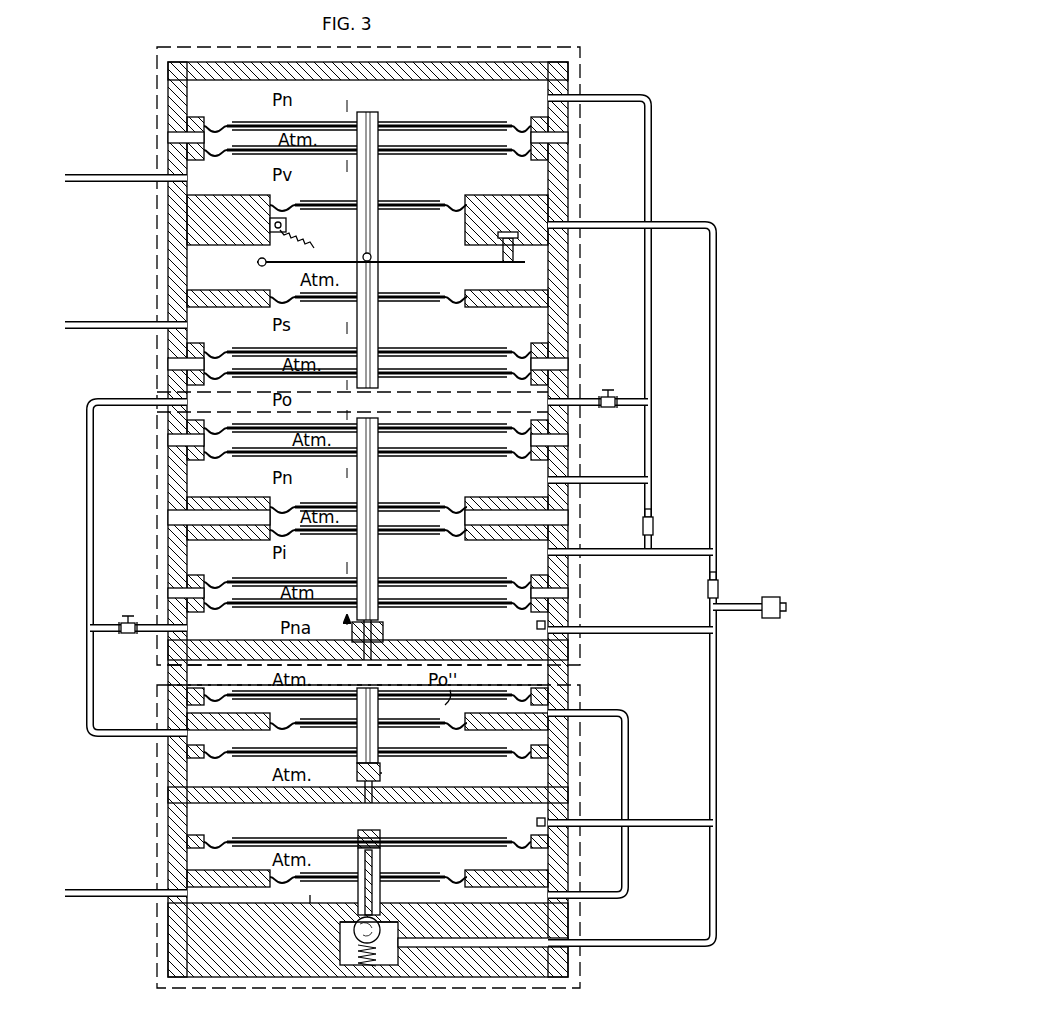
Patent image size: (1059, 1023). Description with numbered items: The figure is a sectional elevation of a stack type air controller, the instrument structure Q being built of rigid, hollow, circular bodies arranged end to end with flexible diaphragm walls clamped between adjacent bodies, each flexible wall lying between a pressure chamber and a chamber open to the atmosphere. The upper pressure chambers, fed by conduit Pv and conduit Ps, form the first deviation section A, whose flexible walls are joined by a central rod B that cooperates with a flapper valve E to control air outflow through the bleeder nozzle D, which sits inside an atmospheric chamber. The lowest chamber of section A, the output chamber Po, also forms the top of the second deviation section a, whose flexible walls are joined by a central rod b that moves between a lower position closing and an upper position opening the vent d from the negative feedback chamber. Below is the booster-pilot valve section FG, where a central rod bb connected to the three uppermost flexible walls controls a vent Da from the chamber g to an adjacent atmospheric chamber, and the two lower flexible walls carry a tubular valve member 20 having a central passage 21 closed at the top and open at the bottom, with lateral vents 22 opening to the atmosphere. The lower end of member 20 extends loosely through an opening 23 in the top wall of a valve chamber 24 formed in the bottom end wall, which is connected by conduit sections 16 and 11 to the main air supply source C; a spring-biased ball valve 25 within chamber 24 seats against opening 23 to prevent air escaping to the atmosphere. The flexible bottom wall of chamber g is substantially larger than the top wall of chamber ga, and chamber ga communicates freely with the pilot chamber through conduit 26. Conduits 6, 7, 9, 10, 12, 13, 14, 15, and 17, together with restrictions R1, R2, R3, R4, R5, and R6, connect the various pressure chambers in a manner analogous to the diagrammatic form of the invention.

The stack type instrument structure Q is at (106, 100).
The first deviation section A is at (133, 262).
The second deviation section a is at (130, 455).
The booster-pilot valve section FG is at (140, 840).
The conduit Pv' Pv is at (97, 173).
The conduit Ps' Ps is at (104, 320).
The flapper valve E is at (432, 262).
The bleeder nozzle D is at (503, 248).
The central shaft or rod B is at (378, 323).
The central shaft or rod b is at (378, 476).
The vent or bleeder outlet d is at (383, 627).
The central rod or shaft bb is at (358, 762).
The vent Da is at (382, 773).
The output pressure chamber Po is at (455, 750).
The pressure chamber g' g is at (480, 817).
The pressure chamber ga' ga is at (310, 896).
The tubular valve member 20 is at (360, 830).
The central passage 21 is at (362, 893).
The lateral vents 22 is at (380, 860).
The opening 23 is at (375, 916).
The valve chamber 24 is at (352, 962).
The ball valve 25 is at (380, 930).
The conduit 26 is at (628, 775).
The conduit 6' 6 is at (645, 283).
The conduit 7' 7 is at (92, 596).
The conduit 9' 9 is at (645, 452).
The conduit 10' 10 is at (716, 376).
The conduit 11' 11 is at (718, 622).
The conduit 12' 12 is at (678, 556).
The conduit 13' 13 is at (665, 627).
The conduit 14' 14 is at (134, 732).
The conduit 15' 15 is at (690, 828).
The conduit 16' 16 is at (716, 882).
The conduit 17' 17 is at (100, 888).
The restriction R1 is at (608, 411).
The restriction R2 is at (128, 636).
The restriction R3 is at (643, 517).
The restriction R4 is at (718, 580).
The restriction R5 is at (537, 625).
The restriction R6 is at (537, 822).
The main air supply source C is at (785, 603).